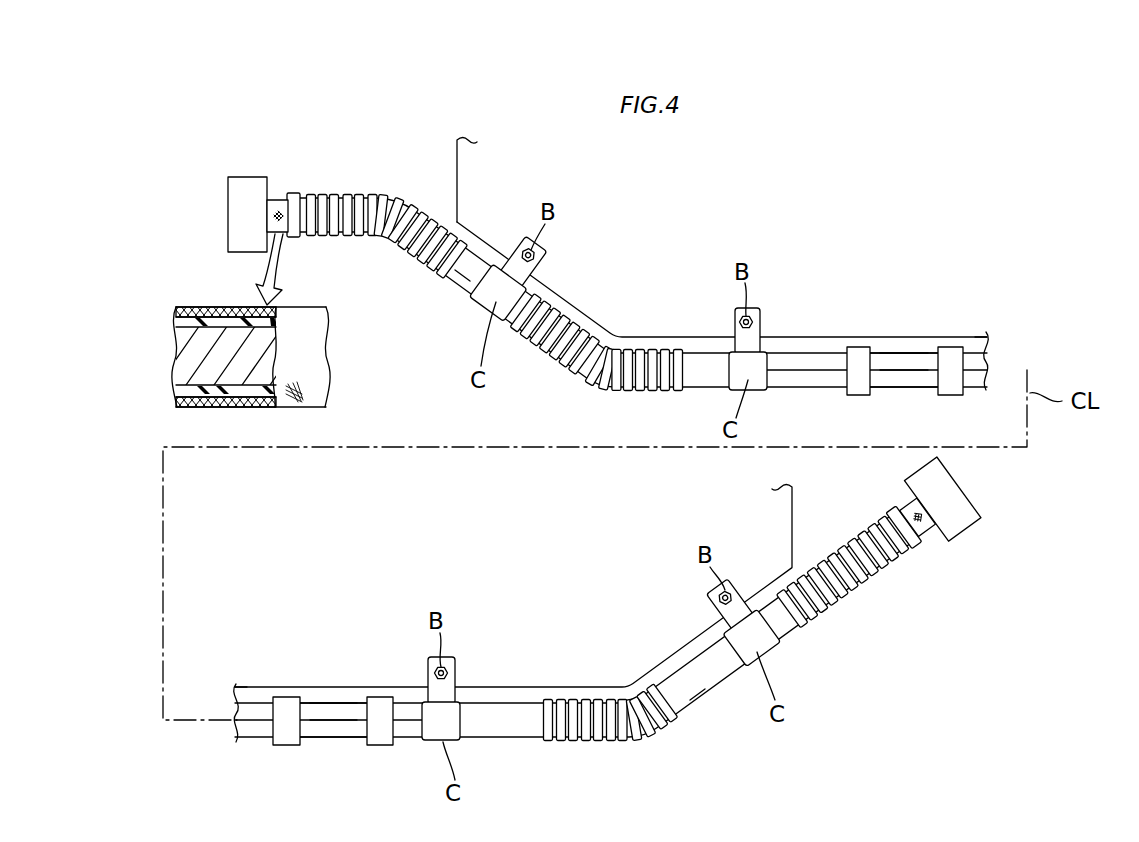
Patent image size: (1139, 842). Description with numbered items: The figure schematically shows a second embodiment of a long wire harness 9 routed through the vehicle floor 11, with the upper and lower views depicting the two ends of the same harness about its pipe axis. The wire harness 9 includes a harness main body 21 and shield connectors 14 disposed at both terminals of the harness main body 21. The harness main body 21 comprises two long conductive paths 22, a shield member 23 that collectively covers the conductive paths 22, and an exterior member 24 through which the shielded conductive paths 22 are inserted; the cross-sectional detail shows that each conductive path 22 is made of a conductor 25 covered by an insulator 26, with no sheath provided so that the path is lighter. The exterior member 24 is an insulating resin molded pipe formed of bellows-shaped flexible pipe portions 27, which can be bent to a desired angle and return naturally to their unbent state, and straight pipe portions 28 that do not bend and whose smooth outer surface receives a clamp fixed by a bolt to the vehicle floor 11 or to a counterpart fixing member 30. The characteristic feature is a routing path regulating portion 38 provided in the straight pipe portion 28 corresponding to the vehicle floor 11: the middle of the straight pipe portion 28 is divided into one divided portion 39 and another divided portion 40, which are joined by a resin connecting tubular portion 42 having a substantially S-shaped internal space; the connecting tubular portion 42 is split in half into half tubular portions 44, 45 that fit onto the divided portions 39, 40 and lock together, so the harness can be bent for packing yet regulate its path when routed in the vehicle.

The wire harness 9 is at (417, 336).
The vehicle floor 11 is at (987, 344).
The shield connector 14 is at (246, 186).
The harness main body 21 is at (560, 367).
The conductive path 22 is at (522, 448).
The shield member 23 is at (278, 200).
The exterior member 24 is at (807, 351).
The conductor 25 is at (183, 355).
The insulator 26 is at (116, 340).
The flexible pipe portion 27 is at (604, 474).
The straight pipe portion 28 is at (531, 302).
The counterpart fixing member 30 is at (456, 190).
The routing path regulating portion 38 is at (901, 398).
The one divided portion 39 is at (860, 356).
The other divided portion 40 is at (950, 356).
The connecting tubular portion 42 is at (890, 351).
The half tubular portion 44 is at (918, 360).
The half tubular portion 45 is at (923, 380).